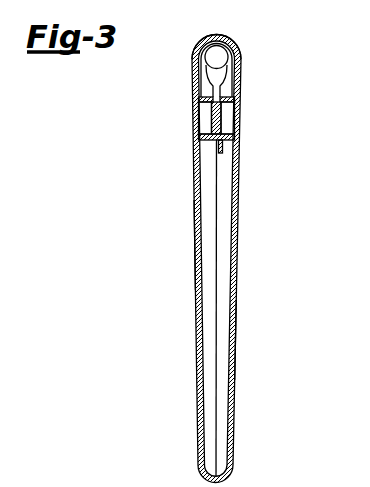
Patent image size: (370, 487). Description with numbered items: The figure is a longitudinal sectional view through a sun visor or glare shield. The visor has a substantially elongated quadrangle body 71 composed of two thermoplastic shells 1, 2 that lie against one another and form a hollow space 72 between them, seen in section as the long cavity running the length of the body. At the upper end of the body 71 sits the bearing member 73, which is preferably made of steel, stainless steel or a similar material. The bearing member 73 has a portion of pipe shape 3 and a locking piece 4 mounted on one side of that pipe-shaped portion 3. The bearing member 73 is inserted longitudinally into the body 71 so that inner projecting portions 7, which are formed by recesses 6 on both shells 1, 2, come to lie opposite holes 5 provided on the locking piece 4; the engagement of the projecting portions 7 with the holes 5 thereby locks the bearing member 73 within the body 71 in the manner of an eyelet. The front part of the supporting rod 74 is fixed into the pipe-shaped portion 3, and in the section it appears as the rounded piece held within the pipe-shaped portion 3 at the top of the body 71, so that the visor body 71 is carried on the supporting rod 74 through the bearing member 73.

The thermoplastic shell 1 is at (240, 243).
The thermoplastic shell 2 is at (187, 243).
The portion of pipe shape 3 is at (195, 40).
The locking piece 4 is at (233, 152).
The holes 5 is at (239, 100).
The recesses 6 is at (233, 118).
The inner projecting portions 7 is at (238, 108).
The elongated quadrangle body 71 is at (237, 337).
The hollow space 72 is at (212, 317).
The bearing member 73 is at (238, 48).
The supporting rod 74 is at (237, 70).